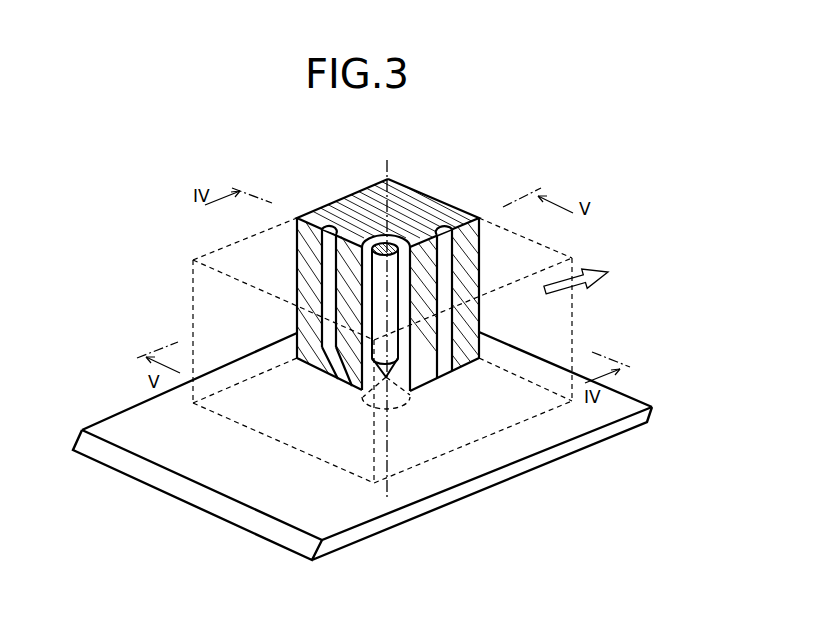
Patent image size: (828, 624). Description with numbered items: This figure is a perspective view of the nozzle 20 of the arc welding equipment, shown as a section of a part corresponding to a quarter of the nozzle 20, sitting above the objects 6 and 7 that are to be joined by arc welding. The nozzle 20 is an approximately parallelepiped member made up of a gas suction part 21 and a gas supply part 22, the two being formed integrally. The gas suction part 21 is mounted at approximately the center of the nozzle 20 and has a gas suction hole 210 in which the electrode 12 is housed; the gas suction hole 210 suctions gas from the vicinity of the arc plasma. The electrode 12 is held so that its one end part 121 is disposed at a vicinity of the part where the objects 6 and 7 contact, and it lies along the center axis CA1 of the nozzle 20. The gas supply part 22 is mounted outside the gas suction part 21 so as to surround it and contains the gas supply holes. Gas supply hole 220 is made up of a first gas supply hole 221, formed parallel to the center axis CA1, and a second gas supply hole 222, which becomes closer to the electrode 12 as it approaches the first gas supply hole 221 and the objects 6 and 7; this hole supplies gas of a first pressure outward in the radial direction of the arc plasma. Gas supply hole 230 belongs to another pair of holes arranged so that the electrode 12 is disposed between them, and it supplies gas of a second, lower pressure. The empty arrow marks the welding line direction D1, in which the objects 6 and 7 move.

The electrode 12 is at (389, 243).
The gas suction hole 210 is at (368, 262).
The first gas supply hole 221 is at (325, 278).
The gas supply hole 220 is at (317, 298).
The second gas supply hole 222 is at (333, 367).
The object 7 is at (135, 418).
The object 6 is at (347, 523).
The nozzle 20 is at (572, 317).
The gas suction part 21 is at (422, 347).
The gas supply part 22 is at (462, 285).
The gas supply hole 230 is at (455, 246).
The one end part 121 is at (392, 357).
The center axis CA1 is at (385, 487).
The welding line direction D1 is at (612, 280).